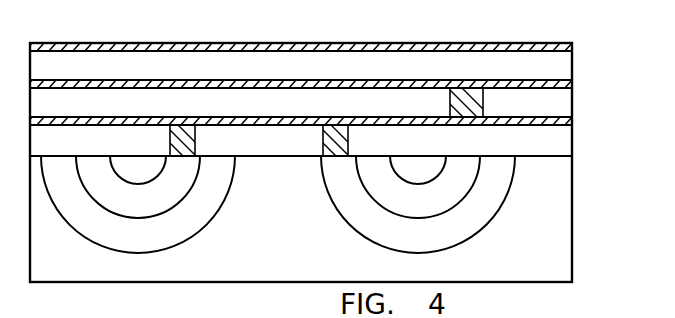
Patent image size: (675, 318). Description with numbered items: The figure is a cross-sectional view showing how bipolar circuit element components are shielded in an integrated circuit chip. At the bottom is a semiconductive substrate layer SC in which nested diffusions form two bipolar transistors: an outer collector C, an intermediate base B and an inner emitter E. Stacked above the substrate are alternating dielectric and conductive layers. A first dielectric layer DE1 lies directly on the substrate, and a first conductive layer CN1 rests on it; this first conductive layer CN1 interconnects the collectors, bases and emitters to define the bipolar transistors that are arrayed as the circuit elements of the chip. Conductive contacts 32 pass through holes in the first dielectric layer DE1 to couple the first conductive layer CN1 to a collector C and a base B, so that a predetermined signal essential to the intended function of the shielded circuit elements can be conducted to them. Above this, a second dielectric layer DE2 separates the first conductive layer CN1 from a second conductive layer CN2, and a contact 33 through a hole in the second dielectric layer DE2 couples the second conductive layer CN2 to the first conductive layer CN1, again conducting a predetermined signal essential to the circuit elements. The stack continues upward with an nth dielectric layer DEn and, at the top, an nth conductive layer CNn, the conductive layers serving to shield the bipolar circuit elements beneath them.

The conductive contacts 32 is at (196, 133).
The contact 33 is at (449, 96).
The nth conductive layer CNn is at (572, 43).
The nth dielectric layer DEn is at (572, 63).
The second conductive layer CN2 is at (572, 81).
The second dielectric layer DE2 is at (572, 96).
The first conductive layer CN1 is at (572, 120).
The first dielectric layer DE1 is at (566, 141).
The semiconductive substrate layer SC is at (572, 238).
The emitter diffusion E is at (278, 170).
The base diffusion B is at (278, 187).
The collector diffusion C is at (278, 204).